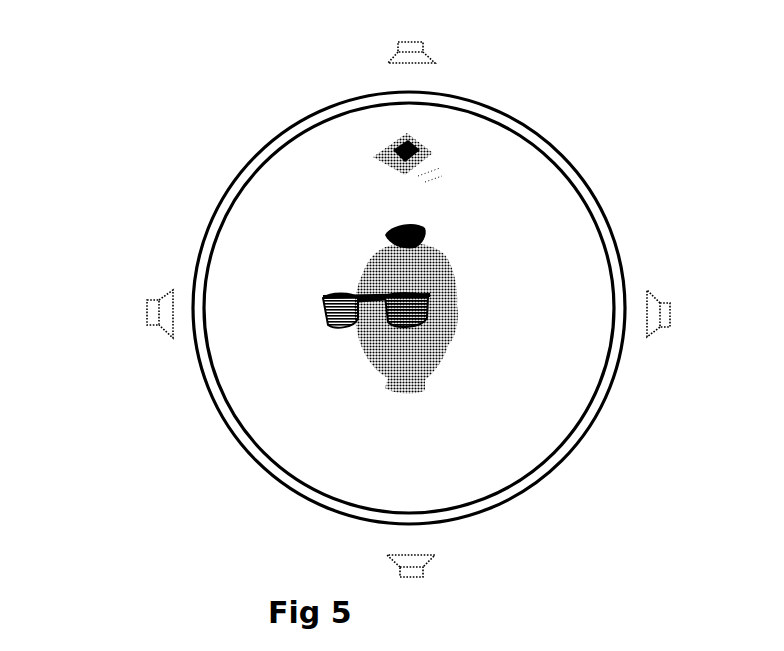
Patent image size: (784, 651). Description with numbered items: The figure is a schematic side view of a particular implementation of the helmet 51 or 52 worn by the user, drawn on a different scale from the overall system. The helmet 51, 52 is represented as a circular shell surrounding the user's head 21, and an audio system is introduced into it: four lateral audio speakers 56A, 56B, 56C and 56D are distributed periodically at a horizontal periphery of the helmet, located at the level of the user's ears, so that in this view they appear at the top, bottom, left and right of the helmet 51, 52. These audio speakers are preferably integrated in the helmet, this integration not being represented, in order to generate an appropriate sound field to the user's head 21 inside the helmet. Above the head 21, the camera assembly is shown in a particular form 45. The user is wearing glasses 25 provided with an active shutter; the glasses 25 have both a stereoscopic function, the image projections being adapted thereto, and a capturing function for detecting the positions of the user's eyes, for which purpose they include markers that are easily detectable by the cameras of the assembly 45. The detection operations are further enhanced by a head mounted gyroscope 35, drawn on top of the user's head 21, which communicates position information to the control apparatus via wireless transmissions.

The helmet 51 is at (186, 166).
The helmet 52 is at (409, 308).
The lateral audio speaker 56A is at (427, 56).
The lateral audio speaker 56B is at (425, 568).
The lateral audio speaker 56C is at (162, 287).
The lateral audio speaker 56D is at (651, 291).
The assembly 45 is at (363, 166).
The user's head 21 is at (474, 297).
The head mounted gyroscope 35 is at (434, 228).
The glasses 25 is at (336, 341).